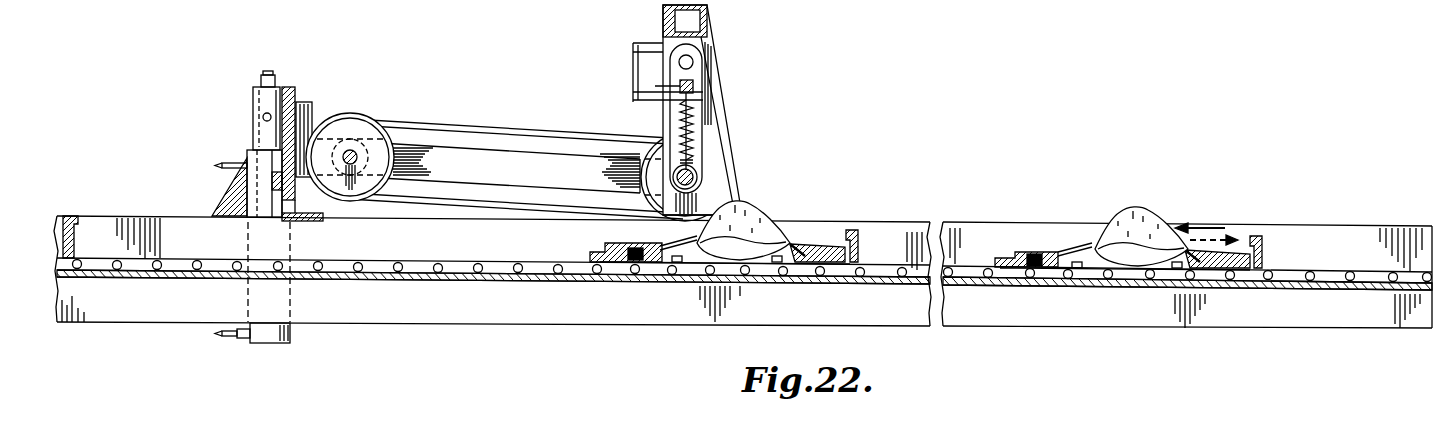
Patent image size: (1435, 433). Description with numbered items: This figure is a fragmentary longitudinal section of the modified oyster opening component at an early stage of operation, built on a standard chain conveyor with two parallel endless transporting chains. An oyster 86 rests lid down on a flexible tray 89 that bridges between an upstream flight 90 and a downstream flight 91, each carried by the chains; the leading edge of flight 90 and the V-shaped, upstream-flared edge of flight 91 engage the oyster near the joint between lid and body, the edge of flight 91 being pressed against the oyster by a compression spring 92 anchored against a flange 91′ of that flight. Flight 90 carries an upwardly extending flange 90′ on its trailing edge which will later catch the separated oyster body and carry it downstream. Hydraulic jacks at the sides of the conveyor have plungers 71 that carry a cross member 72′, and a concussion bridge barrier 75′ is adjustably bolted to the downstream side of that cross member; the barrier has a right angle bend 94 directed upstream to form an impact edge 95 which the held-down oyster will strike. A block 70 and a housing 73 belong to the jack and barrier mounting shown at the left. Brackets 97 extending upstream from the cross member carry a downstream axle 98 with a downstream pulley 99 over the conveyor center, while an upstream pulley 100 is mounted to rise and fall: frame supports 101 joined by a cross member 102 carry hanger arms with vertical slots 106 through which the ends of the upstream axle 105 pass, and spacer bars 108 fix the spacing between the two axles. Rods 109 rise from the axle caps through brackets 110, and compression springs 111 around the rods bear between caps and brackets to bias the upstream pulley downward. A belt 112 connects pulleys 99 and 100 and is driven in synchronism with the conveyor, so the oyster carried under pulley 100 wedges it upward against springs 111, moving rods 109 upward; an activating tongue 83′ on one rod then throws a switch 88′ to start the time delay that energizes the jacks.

The support block 70 is at (256, 174).
The jack plungers 71 is at (263, 76).
The cross member 72′ is at (291, 94).
The housing 73 is at (257, 100).
The concussion bridge barrier 75′ is at (278, 186).
The activating tongue 83′ is at (694, 85).
The oyster 86 is at (765, 208).
The switch 88′ is at (633, 64).
The tray 89 is at (737, 265).
The upstream flight 90 is at (838, 242).
The upwardly extending flange 90′ is at (858, 230).
The downstream flight 91 is at (676, 241).
The flange of flight 91′ is at (594, 252).
The compression spring 92 is at (641, 262).
The right angle bend 94 is at (273, 222).
The impact edge 95 is at (318, 222).
The brackets 97 is at (300, 122).
The downstream axle 98 is at (353, 152).
The downstream pulley 99 is at (352, 150).
The upstream pulley 100 is at (712, 166).
The frame supports 101 is at (712, 46).
The cross member 102 is at (710, 20).
The upstream axle 105 is at (696, 180).
The vertical slots 106 is at (690, 152).
The spacer bars 108 is at (447, 160).
The rods 109 is at (680, 113).
The brackets 110 is at (648, 96).
The compression springs 111 is at (698, 120).
The belt 112 is at (514, 123).